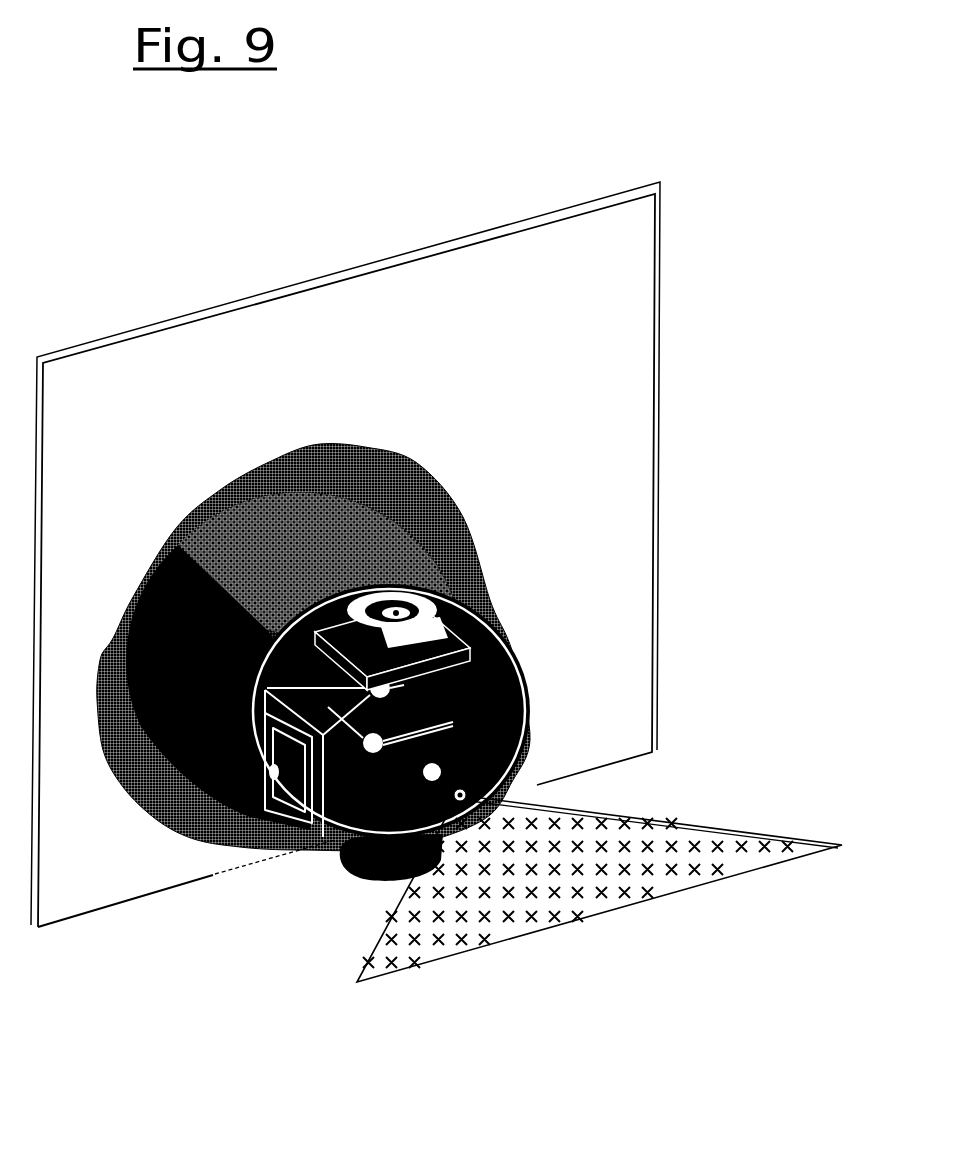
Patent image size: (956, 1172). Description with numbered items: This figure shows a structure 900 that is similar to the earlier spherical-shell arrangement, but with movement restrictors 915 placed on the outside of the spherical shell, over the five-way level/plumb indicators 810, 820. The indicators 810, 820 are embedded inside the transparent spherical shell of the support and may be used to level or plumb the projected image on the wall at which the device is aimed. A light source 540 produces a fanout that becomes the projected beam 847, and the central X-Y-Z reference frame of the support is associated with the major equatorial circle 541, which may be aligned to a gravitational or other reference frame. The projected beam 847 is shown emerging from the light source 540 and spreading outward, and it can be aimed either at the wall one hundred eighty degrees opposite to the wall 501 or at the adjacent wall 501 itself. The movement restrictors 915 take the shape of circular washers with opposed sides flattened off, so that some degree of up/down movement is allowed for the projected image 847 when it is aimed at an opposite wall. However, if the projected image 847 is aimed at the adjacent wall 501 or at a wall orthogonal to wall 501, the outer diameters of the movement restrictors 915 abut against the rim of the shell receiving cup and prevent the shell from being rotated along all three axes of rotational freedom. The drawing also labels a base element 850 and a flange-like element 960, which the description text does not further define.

The structure 900 is at (235, 147).
The wall 501 is at (476, 245).
The major equatorial circle 541 is at (510, 718).
The light source 540 is at (462, 797).
The projected beam 847 is at (617, 908).
The base mount 850 is at (320, 857).
The 5-way level/plumb indicator 820 is at (283, 840).
The mounting flange 960 is at (222, 842).
The movement restrictor 915 is at (428, 596).
The 5-way level/plumb indicator 810 is at (480, 624).